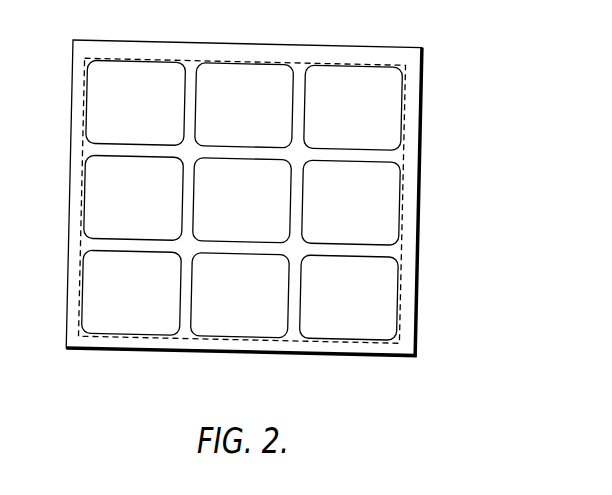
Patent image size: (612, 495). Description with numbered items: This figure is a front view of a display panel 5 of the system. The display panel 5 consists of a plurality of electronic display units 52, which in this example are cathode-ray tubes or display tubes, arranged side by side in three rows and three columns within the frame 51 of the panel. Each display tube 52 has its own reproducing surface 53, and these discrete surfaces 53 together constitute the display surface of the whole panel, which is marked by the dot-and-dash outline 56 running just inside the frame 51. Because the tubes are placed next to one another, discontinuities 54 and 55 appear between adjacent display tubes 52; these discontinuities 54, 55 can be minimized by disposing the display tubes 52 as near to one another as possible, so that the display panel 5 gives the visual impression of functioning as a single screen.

The display panel 5 is at (277, 207).
The frame 51 is at (408, 212).
The electronic display unit 52 is at (396, 108).
The reproducing surface 53 is at (373, 117).
The discontinuity 54 is at (298, 152).
The discontinuity 55 is at (193, 83).
The dot-and-dash outline 56 is at (241, 227).